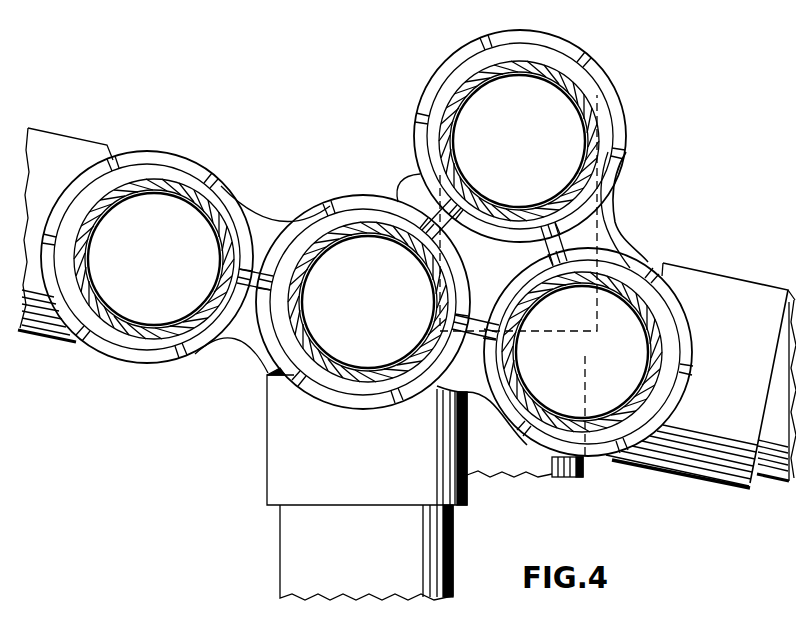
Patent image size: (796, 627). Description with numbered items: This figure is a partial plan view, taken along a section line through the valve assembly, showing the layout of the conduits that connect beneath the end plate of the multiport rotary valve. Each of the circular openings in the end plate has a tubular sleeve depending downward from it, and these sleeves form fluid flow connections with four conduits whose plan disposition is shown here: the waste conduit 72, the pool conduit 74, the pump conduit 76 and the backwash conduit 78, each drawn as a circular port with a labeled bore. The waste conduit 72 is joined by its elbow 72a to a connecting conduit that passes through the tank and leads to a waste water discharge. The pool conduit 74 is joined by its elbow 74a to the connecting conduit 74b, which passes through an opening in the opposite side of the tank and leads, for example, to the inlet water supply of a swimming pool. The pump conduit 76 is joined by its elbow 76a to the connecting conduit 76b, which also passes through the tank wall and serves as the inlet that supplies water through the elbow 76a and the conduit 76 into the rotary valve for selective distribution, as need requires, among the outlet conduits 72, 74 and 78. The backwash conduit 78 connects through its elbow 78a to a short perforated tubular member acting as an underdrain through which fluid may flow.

The conduit 72 is at (160, 180).
The elbow 72a is at (68, 146).
The conduit 76 is at (378, 224).
The elbow 76a is at (273, 452).
The connecting conduit 76b is at (293, 562).
The conduit 78 is at (590, 117).
The elbow 78a is at (522, 460).
The conduit 74 is at (591, 420).
The elbow 74a is at (715, 283).
The connecting conduit 74b is at (772, 447).